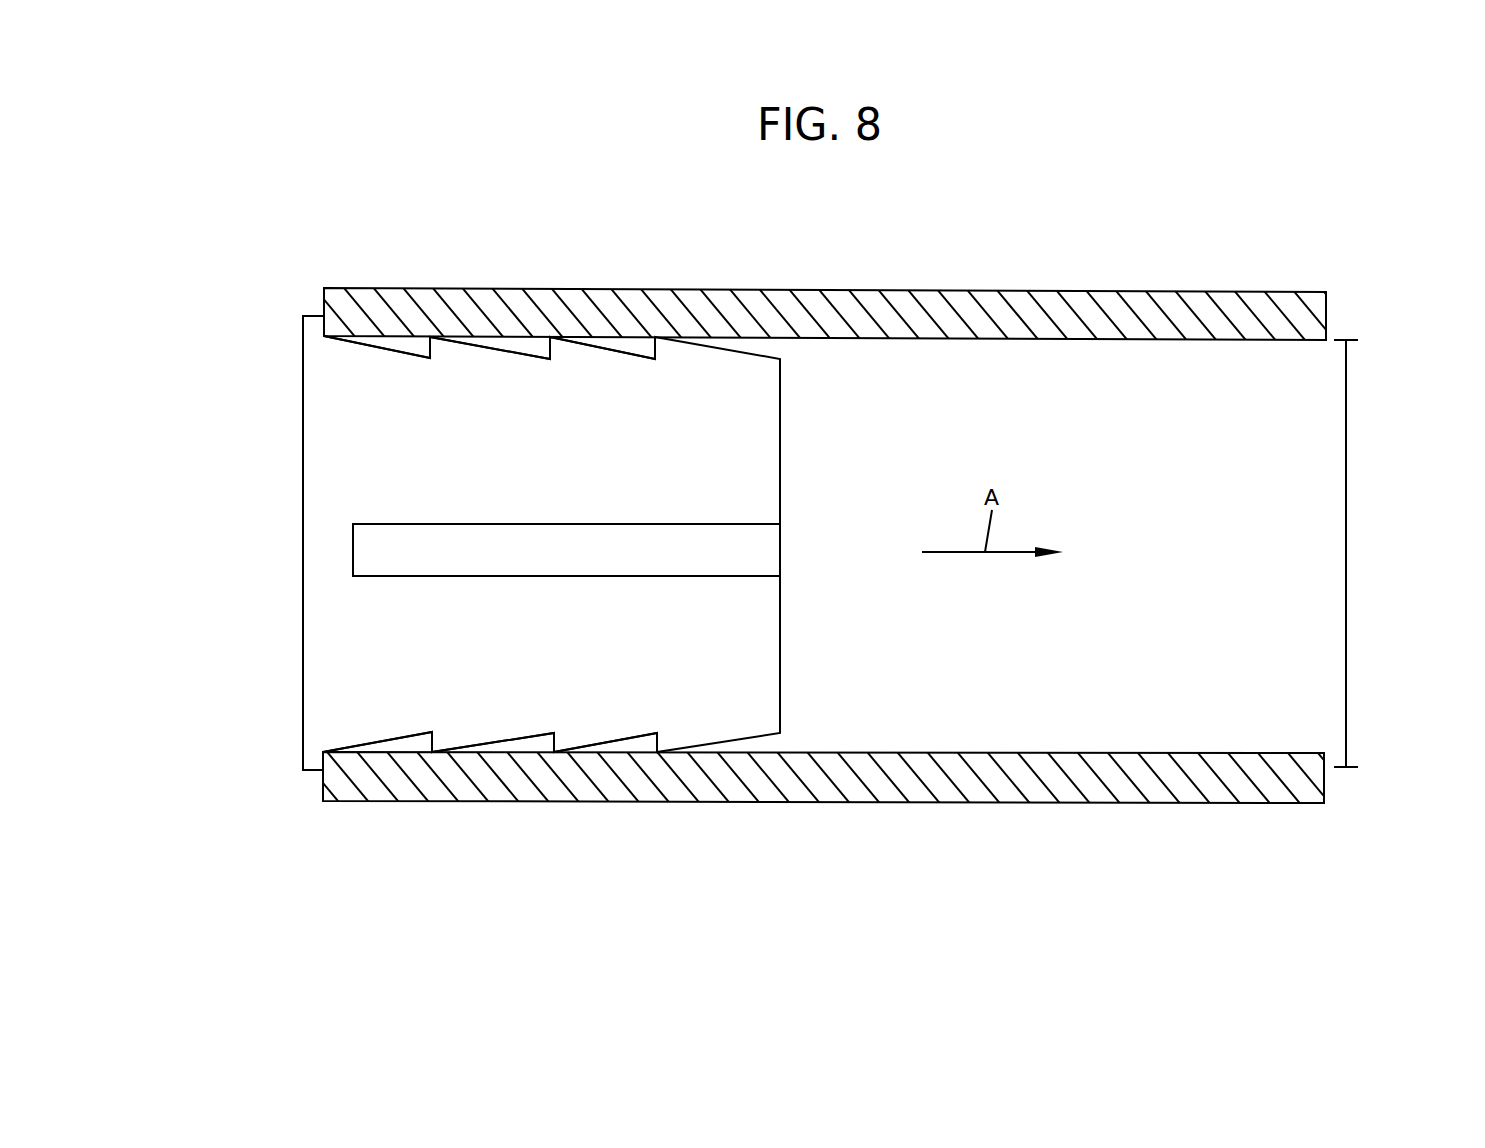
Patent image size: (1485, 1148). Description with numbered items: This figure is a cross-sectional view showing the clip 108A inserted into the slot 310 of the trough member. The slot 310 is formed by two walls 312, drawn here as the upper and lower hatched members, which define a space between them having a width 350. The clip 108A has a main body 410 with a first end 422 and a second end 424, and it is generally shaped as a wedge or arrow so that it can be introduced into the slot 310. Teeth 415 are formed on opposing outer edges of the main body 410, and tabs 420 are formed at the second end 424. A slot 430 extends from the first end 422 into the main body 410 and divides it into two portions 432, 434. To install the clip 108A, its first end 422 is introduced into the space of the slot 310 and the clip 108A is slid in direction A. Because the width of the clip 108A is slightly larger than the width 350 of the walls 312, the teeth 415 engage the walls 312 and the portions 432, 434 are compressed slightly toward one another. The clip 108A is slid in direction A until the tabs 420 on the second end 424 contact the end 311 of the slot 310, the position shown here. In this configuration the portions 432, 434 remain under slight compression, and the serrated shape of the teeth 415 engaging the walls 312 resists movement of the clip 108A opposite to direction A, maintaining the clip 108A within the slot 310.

The slot 310 is at (312, 271).
The end of slot 311 is at (325, 302).
The walls 312 is at (950, 298).
The width of walls 350 is at (1347, 570).
The main body 410 is at (582, 383).
The teeth 415 is at (434, 338).
The tabs 420 is at (315, 330).
The first end 422 is at (780, 470).
The second end 424 is at (303, 554).
The slot 430 is at (492, 562).
The portion 432 is at (567, 466).
The portion 434 is at (622, 670).
The clip 108A is at (342, 460).